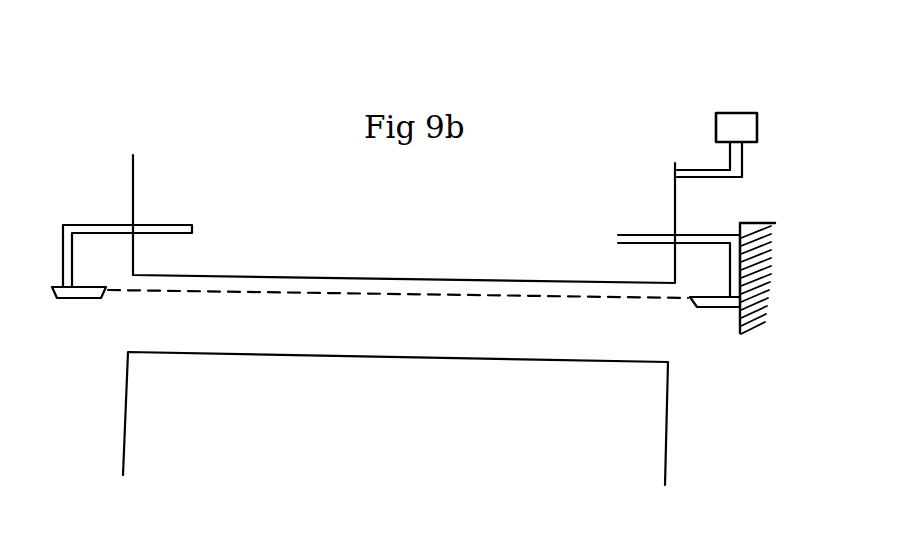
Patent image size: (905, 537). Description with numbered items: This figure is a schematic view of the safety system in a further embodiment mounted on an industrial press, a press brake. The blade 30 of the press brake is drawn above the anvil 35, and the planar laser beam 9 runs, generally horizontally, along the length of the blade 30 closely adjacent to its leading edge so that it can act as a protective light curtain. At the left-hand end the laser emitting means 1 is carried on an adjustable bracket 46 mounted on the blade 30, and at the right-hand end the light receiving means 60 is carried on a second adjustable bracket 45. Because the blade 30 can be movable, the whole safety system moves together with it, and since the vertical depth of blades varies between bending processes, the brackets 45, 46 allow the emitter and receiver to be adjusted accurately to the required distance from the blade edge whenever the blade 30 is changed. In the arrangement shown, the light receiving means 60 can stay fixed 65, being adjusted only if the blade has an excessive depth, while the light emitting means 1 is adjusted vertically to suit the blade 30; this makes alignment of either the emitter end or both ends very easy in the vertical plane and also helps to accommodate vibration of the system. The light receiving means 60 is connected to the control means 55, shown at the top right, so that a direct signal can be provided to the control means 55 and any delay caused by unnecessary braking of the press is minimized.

The laser emitting means 1 is at (50, 298).
The planar laser beam 9 is at (409, 295).
The blade 30 is at (157, 173).
The anvil 35 is at (138, 423).
The adjustable bracket 45 is at (727, 235).
The adjustable bracket 46 is at (88, 228).
The control means 55 is at (760, 128).
The light receiving means 60 is at (720, 312).
The fixed mounting 65 is at (757, 222).